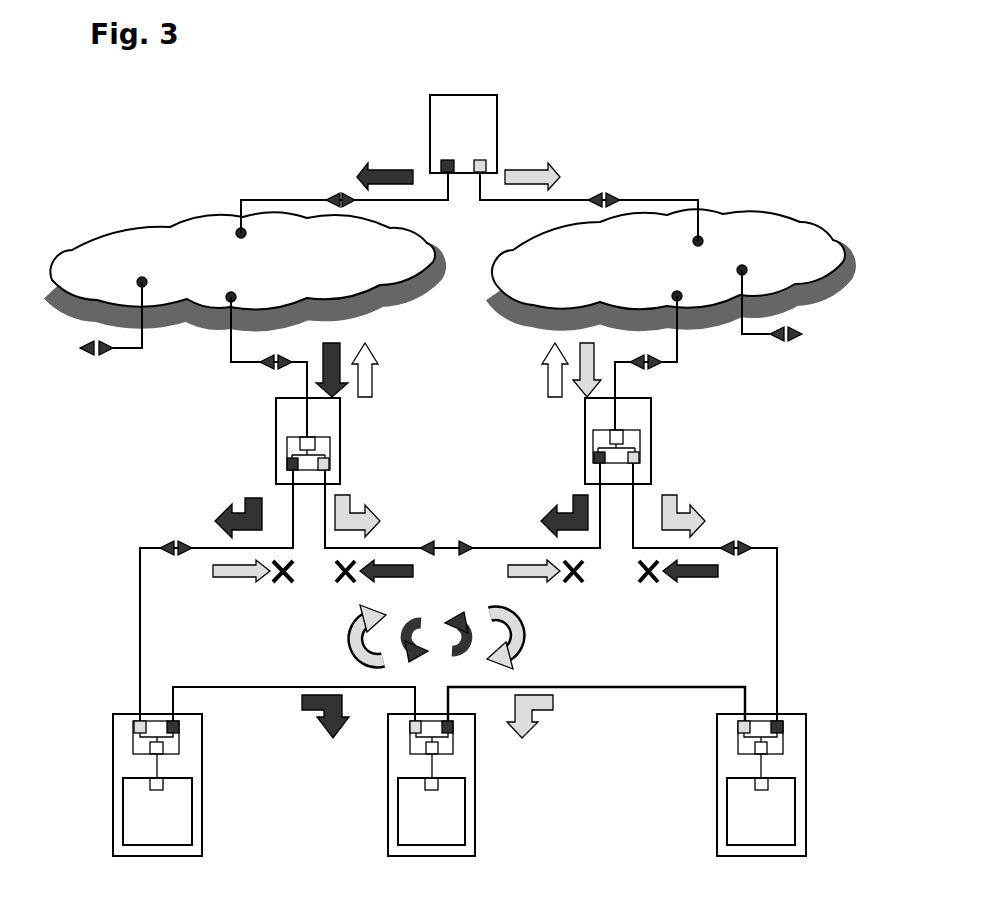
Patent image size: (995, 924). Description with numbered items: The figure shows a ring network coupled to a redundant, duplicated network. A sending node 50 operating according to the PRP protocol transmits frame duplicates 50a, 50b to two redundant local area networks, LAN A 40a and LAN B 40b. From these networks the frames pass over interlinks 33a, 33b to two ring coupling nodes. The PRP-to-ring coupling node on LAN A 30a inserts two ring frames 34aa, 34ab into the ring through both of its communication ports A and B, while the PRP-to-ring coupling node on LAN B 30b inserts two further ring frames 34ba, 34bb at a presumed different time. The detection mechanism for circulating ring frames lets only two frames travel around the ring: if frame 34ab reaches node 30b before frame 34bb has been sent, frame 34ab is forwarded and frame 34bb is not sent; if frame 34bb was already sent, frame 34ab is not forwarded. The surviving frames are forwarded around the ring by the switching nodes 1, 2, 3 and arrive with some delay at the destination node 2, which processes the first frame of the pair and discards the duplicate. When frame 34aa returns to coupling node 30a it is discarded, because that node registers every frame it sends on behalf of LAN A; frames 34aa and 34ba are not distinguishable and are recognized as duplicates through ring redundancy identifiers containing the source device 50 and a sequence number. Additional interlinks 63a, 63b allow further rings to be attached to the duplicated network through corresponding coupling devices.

The switching node 1 is at (158, 824).
The destination node 2 is at (408, 805).
The switching node 3 is at (743, 803).
The PRP-to-ring coupling node on LAN A 30a is at (274, 438).
The PRP-to-ring coupling node on LAN B 30b is at (652, 437).
The interlink 33a is at (293, 382).
The interlink 33b is at (632, 382).
The ring frame 34aa is at (240, 512).
The ring frame 34ab is at (366, 511).
The ring frame 34ba is at (553, 500).
The ring frame 34bb is at (690, 512).
The LAN A 40a is at (242, 214).
The LAN B 40b is at (668, 212).
The sending node 50 is at (498, 130).
The frame duplicate 50a is at (380, 150).
The frame duplicate 50b is at (565, 150).
The additional interlink 63a is at (86, 321).
The additional interlink 63b is at (802, 309).